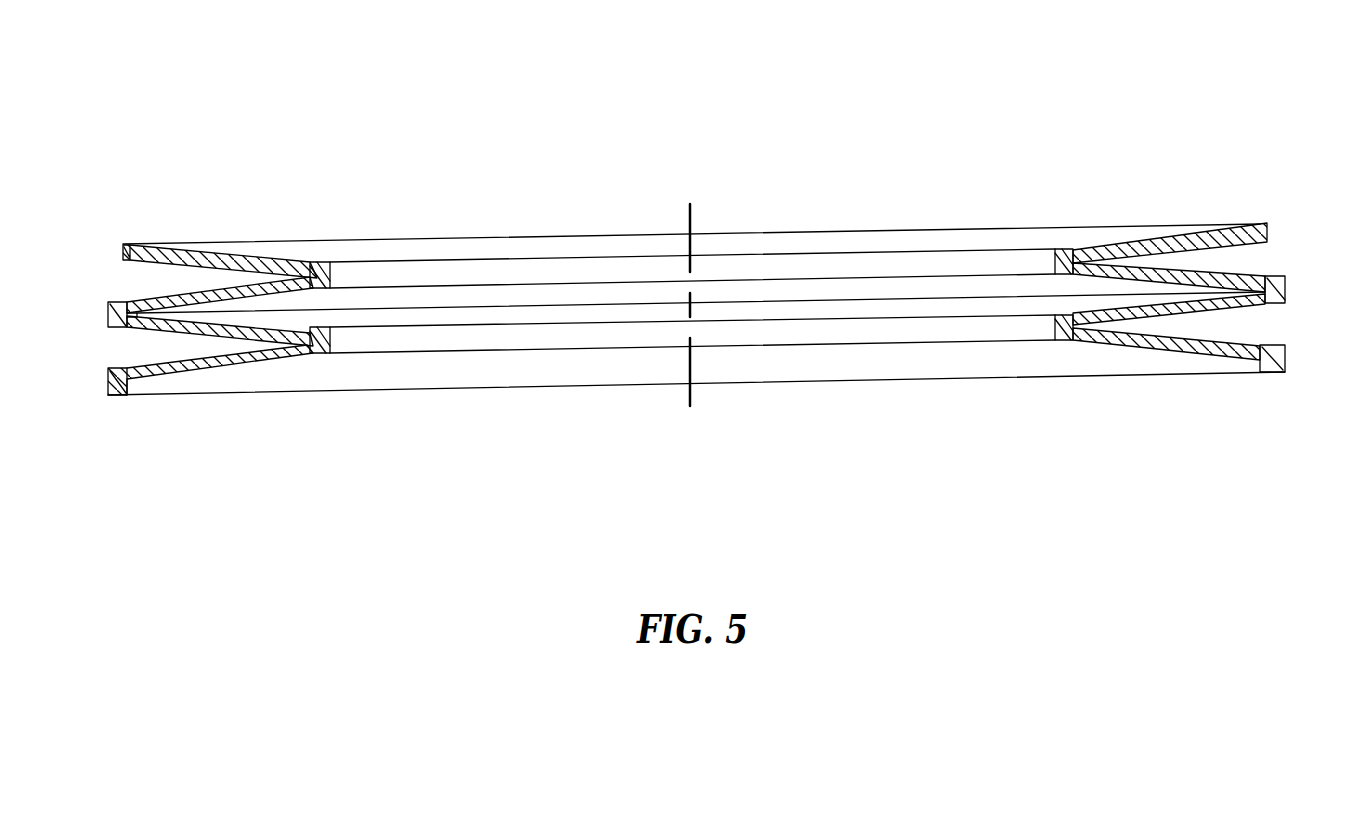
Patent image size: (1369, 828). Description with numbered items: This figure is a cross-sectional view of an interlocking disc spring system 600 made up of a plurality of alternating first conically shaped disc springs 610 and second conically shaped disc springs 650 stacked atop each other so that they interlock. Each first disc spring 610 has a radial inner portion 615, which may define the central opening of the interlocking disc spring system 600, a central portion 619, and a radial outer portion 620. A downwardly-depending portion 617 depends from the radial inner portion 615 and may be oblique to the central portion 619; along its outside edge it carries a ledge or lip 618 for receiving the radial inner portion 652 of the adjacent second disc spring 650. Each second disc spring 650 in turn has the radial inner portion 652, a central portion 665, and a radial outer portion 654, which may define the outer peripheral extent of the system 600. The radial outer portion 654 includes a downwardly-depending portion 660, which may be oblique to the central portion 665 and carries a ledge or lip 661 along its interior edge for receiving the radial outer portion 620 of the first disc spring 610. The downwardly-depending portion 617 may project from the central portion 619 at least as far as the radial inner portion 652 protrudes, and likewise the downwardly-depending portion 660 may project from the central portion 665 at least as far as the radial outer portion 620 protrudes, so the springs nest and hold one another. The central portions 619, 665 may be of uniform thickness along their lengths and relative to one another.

The interlocking disc spring system 600 is at (1063, 470).
The first conically shaped disc spring 610 is at (1153, 237).
The radial inner portion 615 is at (1072, 248).
The downwardly-depending portion 617 is at (1057, 257).
The ledge or lip 618 is at (298, 267).
The central portion 619 is at (1130, 238).
The radial outer portion 620 is at (1233, 227).
The second conically shaped disc spring 650 is at (1197, 347).
The radial inner portion 652 is at (1077, 275).
The radial outer portion 654 is at (1262, 357).
The downwardly-depending portion 660 is at (1283, 370).
The ledge or lip 661 is at (137, 328).
The central portion 665 is at (1168, 350).